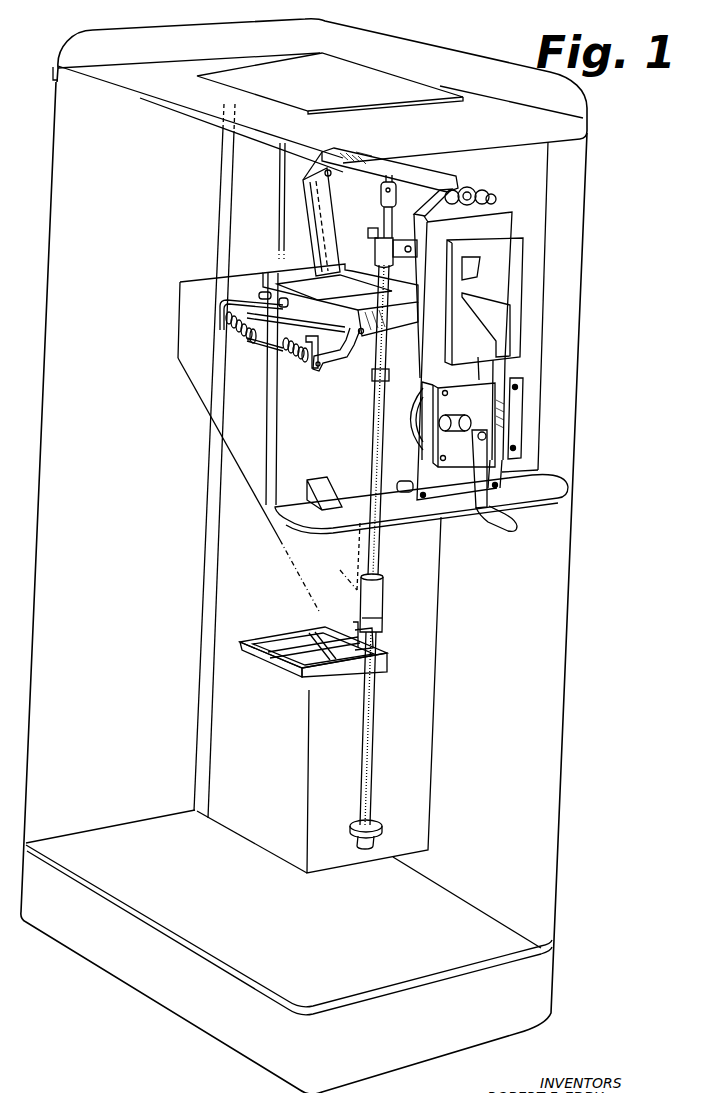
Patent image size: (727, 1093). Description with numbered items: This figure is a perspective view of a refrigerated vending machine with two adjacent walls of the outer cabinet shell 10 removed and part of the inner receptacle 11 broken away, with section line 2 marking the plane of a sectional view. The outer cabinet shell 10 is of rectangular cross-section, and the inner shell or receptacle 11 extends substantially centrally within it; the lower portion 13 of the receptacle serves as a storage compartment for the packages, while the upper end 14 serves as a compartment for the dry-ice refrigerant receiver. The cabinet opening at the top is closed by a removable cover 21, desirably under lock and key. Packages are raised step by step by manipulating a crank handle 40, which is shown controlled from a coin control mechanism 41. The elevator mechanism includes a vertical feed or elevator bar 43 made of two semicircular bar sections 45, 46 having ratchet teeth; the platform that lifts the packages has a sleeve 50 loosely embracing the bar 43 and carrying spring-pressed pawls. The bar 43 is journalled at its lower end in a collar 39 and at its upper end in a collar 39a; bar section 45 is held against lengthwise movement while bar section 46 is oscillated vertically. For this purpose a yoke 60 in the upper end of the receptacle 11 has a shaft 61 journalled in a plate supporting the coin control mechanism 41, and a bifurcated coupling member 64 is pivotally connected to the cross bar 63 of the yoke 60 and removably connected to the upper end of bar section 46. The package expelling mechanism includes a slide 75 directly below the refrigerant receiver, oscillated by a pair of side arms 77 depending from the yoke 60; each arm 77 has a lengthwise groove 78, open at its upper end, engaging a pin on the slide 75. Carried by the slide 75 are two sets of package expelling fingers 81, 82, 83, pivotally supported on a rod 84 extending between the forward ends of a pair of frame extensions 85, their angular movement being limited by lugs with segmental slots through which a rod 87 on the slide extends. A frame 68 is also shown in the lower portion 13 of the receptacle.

The section line 2- 2 is at (87, 17).
The outer cabinet shell 10 is at (567, 644).
The inner shell or receptacle 11 is at (422, 730).
The lower portion of the inner receptacle 13 is at (427, 657).
The upper end of the inner receptacle 14 is at (458, 163).
The removable cover 21 is at (372, 80).
The collar 39 is at (374, 837).
The collar 39a is at (377, 252).
The crank handle 40 is at (505, 525).
The coin control mechanism 41 is at (524, 393).
The vertical feed or elevator bar 43 is at (376, 787).
The bar section 45 is at (374, 407).
The bar section 46 is at (389, 374).
The sleeve 50 is at (383, 603).
The yoke 60 is at (393, 158).
The shaft 61 is at (470, 200).
The cross bar of the yoke 63 is at (365, 155).
The bifurcated coupling member 64 is at (380, 192).
The tray frame 68 is at (288, 653).
The slide 75 is at (278, 272).
The side arms 77 is at (306, 201).
The groove 78 is at (323, 212).
The package expelling finger 81 is at (221, 311).
The package expelling finger 82 is at (224, 322).
The package expelling finger 83 is at (230, 337).
The rod 84 is at (253, 345).
The frame extensions 85 is at (213, 281).
The rod 87 is at (308, 278).